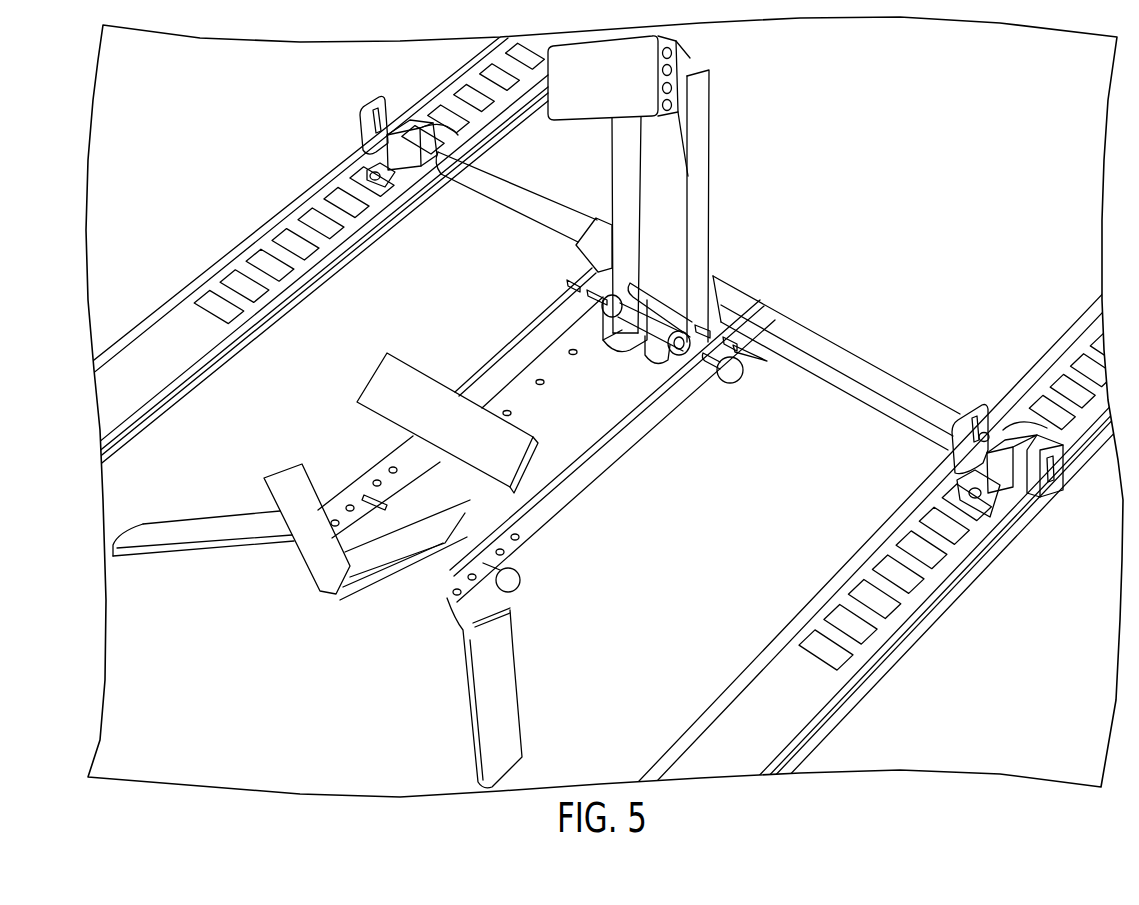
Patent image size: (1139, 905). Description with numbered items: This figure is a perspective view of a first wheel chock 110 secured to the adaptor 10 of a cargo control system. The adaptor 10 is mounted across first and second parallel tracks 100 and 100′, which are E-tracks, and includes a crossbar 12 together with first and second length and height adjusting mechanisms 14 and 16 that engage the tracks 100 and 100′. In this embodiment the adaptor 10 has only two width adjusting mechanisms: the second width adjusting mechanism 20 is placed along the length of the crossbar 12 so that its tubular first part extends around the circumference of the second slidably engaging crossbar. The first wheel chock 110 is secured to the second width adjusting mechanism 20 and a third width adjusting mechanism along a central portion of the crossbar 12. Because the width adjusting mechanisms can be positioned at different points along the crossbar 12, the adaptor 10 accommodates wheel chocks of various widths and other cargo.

The adaptor 10 is at (908, 310).
The crossbar 12 is at (799, 401).
The first length and height adjusting mechanism 14 is at (342, 123).
The second length and height adjusting mechanism 16 is at (998, 408).
The second width adjusting mechanism 20 is at (759, 274).
The first parallel track 100 is at (213, 353).
The second parallel track 100′ is at (823, 723).
The first wheel chock 110 is at (742, 138).